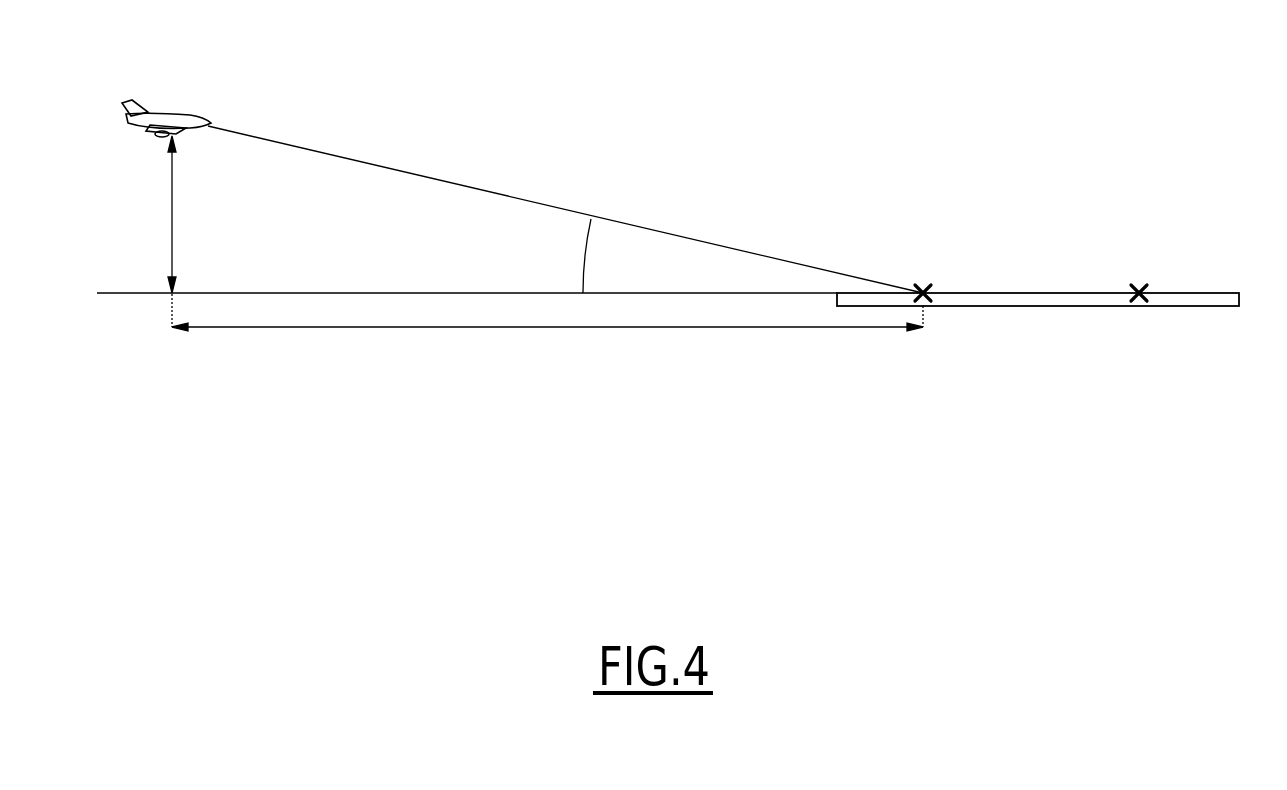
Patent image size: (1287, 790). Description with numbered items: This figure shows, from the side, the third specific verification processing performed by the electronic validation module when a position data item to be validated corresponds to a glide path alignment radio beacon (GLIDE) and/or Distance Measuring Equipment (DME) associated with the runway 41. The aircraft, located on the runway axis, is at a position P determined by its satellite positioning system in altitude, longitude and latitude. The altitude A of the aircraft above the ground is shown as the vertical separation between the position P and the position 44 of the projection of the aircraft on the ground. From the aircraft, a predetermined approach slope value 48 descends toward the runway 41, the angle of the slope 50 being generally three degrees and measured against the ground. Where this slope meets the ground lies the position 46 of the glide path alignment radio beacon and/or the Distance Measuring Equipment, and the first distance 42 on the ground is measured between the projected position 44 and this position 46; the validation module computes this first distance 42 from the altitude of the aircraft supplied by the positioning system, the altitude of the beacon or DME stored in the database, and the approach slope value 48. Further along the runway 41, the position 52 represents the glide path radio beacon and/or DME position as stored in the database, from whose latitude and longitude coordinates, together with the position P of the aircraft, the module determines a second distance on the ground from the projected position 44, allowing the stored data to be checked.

The position of the aircraft P is at (191, 118).
The altitude of aircraft above runway A is at (157, 214).
The predetermined approach slope value 48 is at (407, 177).
The angle of the slope 50 is at (564, 256).
The position of the projection of the aircraft on the ground 44 is at (172, 294).
The first distance 42 is at (463, 328).
The runway 41 is at (1018, 297).
The position of the glide path alignment radio beacon 46 is at (935, 305).
The position of the glide path alignment radio beacon stored in the database 52 is at (1141, 305).